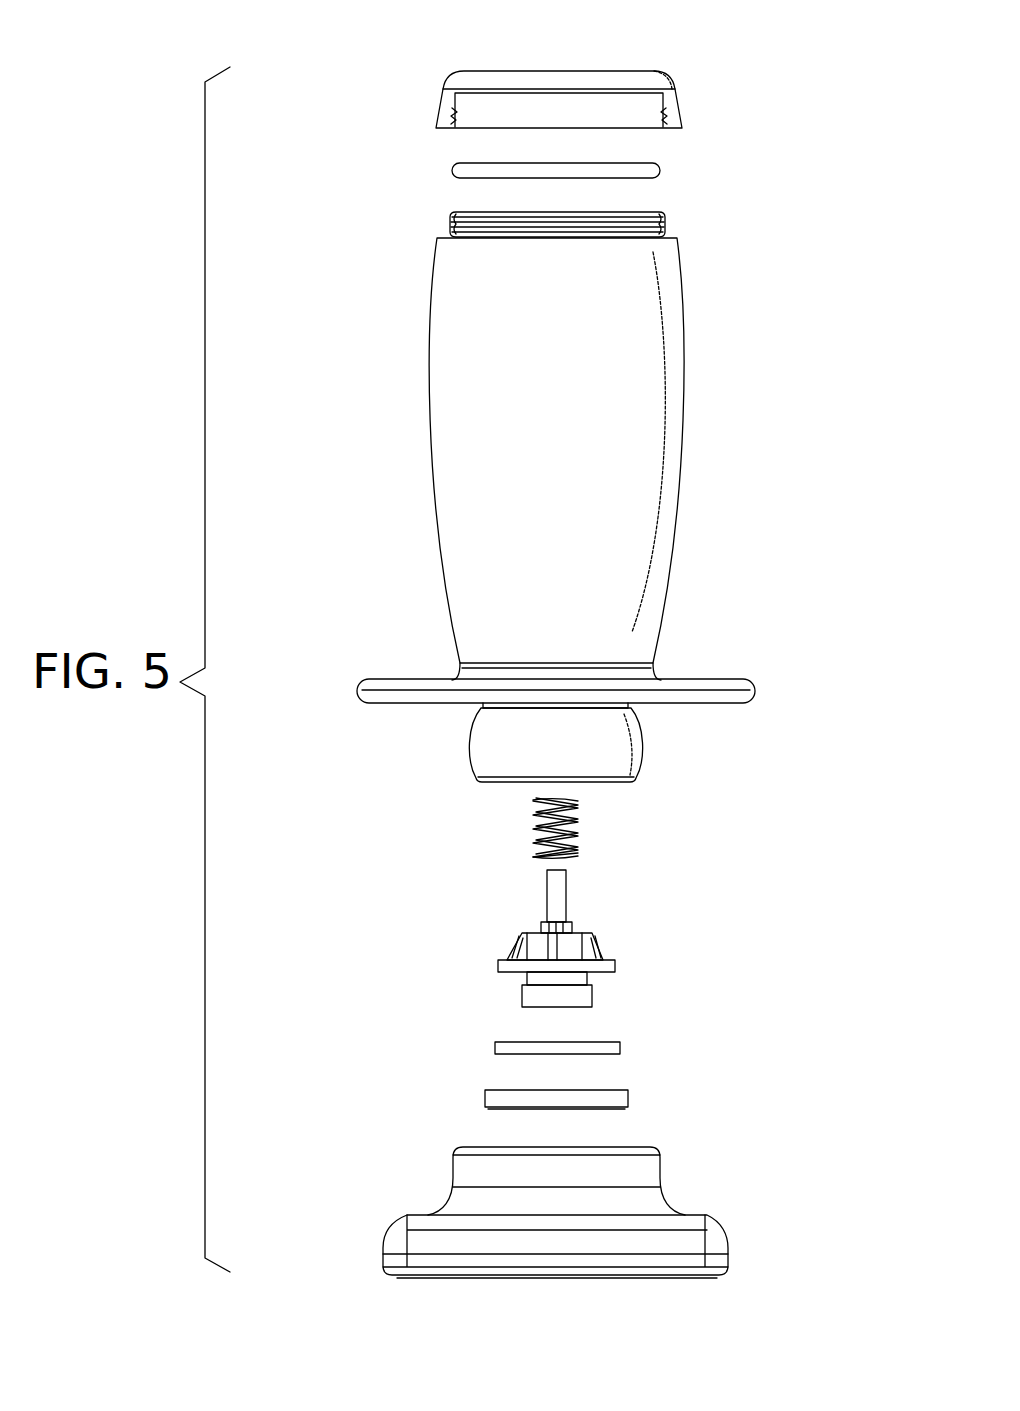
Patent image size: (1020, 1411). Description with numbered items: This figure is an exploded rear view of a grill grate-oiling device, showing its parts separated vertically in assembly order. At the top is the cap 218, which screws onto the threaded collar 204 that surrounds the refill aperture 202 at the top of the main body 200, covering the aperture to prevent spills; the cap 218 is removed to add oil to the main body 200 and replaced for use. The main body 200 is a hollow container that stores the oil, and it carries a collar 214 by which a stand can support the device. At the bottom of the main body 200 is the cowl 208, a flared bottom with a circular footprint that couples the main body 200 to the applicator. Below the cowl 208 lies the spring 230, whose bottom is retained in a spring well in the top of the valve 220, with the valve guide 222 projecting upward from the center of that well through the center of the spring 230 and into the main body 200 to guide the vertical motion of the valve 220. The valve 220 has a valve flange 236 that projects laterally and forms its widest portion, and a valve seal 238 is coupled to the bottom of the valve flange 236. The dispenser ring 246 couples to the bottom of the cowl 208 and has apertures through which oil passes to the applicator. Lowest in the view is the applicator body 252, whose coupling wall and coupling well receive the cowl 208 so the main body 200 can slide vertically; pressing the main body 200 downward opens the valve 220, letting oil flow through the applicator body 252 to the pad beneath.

The main body 200 is at (612, 461).
The refill aperture 202 is at (630, 211).
The threaded collar 204 is at (450, 217).
The cowl 208 is at (620, 744).
The collar 214 is at (745, 679).
The cap 218 is at (598, 71).
The valve 220 is at (594, 942).
The valve guide 222 is at (547, 893).
The spring 230 is at (533, 827).
The valve flange 236 is at (616, 966).
The valve seal 238 is at (621, 1043).
The dispenser ring 246 is at (629, 1094).
The applicator body 252 is at (678, 1212).